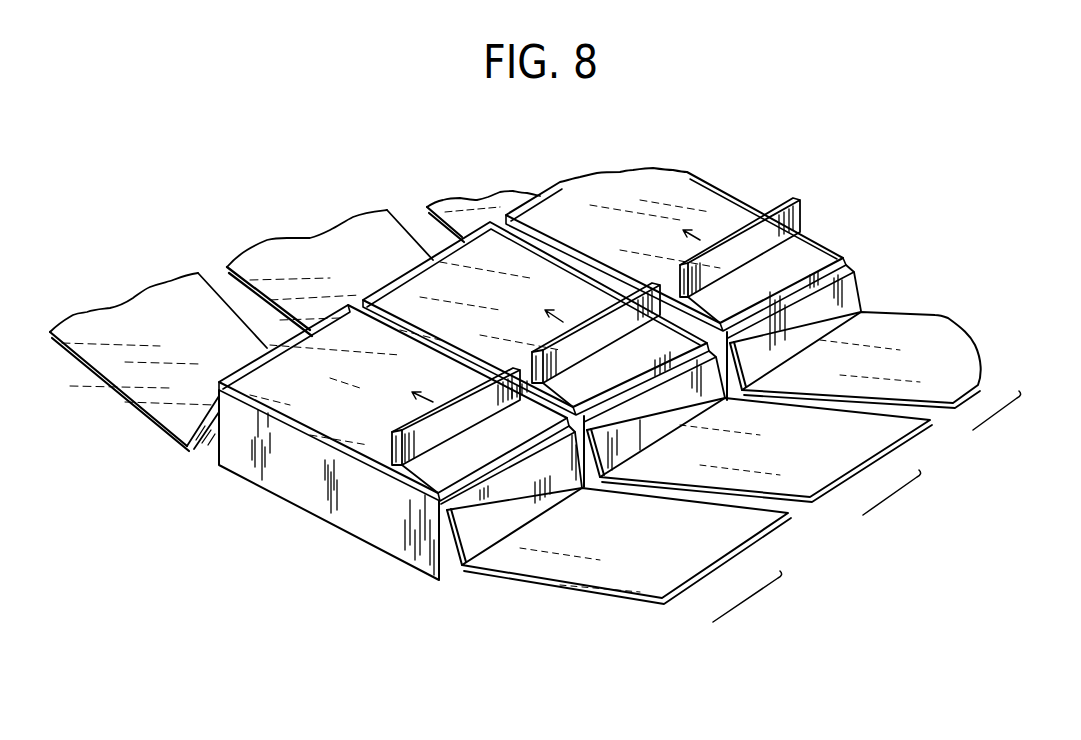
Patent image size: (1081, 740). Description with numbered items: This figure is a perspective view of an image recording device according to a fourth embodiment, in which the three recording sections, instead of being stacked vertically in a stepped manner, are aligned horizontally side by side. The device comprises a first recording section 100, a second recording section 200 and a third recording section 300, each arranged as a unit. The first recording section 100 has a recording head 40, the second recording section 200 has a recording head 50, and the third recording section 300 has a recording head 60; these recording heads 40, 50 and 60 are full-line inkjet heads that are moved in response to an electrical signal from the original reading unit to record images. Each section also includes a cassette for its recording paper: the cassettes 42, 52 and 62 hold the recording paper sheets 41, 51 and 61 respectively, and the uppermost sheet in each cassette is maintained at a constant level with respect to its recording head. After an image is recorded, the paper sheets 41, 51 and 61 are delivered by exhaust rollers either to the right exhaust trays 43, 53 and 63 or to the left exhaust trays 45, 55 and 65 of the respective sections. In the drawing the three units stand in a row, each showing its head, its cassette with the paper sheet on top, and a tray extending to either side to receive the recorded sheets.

The recording head 40 is at (400, 432).
The recording paper sheet 41 is at (263, 370).
The cassette 42 is at (352, 527).
The right exhaust tray 43 is at (593, 578).
The left exhaust tray 45 is at (117, 318).
The recording head 50 is at (545, 350).
The recording paper sheet 51 is at (433, 275).
The cassette 52 is at (387, 277).
The right exhaust tray 53 is at (810, 497).
The left exhaust tray 55 is at (320, 243).
The recording head 60 is at (680, 265).
The recording paper sheet 61 is at (599, 187).
The cassette 62 is at (522, 195).
The right exhaust tray 63 is at (957, 354).
The left exhaust tray 65 is at (490, 207).
The first recording section 100 is at (775, 595).
The second recording section 200 is at (919, 489).
The third recording section 300 is at (1025, 409).